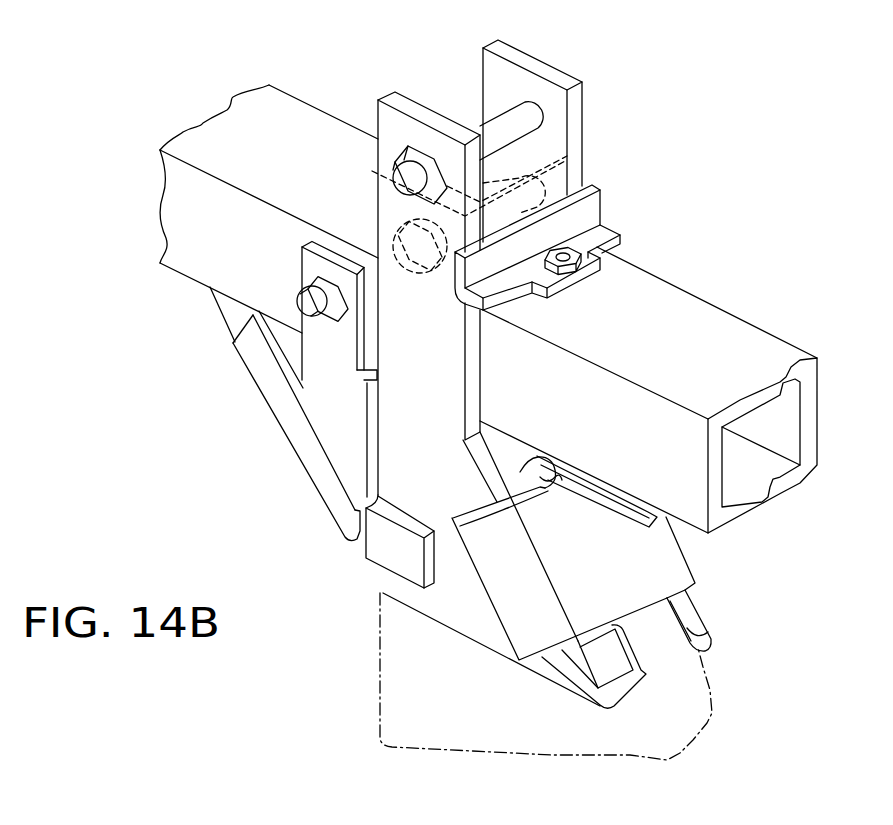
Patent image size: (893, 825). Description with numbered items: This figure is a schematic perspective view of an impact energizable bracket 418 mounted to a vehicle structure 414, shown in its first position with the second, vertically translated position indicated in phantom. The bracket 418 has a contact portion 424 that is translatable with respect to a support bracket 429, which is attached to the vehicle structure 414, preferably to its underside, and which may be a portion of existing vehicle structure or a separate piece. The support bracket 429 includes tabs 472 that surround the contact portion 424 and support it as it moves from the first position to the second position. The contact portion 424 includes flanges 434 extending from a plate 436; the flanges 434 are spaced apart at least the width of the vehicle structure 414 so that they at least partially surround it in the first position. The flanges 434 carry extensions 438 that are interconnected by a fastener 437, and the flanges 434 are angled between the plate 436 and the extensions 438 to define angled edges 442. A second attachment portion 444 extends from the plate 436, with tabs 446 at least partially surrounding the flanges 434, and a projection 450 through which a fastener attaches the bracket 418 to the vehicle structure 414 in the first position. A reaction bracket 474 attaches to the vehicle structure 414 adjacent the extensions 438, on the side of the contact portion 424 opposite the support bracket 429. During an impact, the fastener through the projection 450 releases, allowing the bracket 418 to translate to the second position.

The vehicle structure 414 is at (703, 298).
The bracket 418 is at (539, 50).
The contact portion 424 is at (470, 640).
The support bracket 429 is at (287, 436).
The flanges 434 is at (598, 693).
The plate 436 is at (614, 702).
The fastener 437 is at (478, 128).
The extensions 438 is at (578, 142).
The angled edges 442 is at (500, 466).
The second attachment portion 444 is at (693, 565).
The tabs 446 is at (553, 650).
The projection 450 is at (612, 522).
The tabs 472 is at (363, 559).
The reaction bracket 474 is at (598, 205).